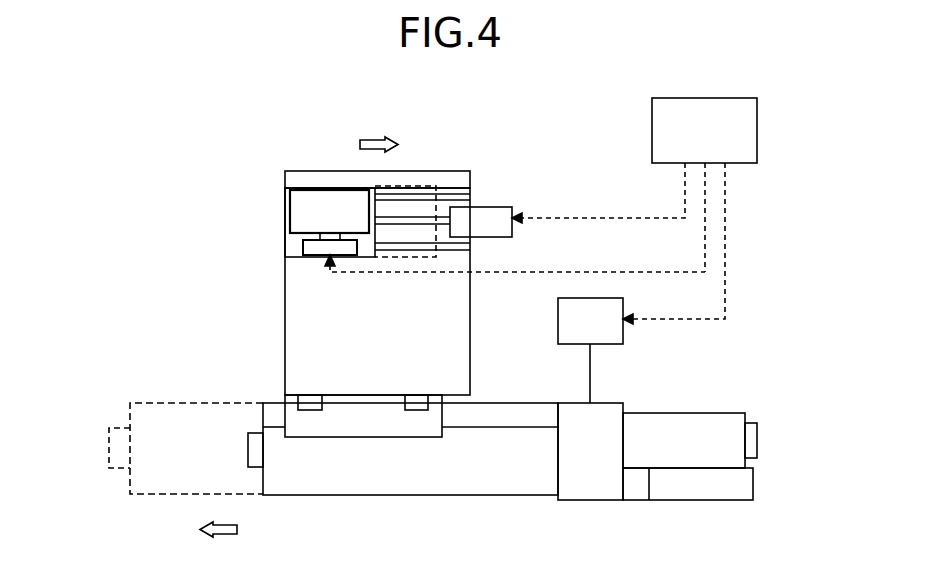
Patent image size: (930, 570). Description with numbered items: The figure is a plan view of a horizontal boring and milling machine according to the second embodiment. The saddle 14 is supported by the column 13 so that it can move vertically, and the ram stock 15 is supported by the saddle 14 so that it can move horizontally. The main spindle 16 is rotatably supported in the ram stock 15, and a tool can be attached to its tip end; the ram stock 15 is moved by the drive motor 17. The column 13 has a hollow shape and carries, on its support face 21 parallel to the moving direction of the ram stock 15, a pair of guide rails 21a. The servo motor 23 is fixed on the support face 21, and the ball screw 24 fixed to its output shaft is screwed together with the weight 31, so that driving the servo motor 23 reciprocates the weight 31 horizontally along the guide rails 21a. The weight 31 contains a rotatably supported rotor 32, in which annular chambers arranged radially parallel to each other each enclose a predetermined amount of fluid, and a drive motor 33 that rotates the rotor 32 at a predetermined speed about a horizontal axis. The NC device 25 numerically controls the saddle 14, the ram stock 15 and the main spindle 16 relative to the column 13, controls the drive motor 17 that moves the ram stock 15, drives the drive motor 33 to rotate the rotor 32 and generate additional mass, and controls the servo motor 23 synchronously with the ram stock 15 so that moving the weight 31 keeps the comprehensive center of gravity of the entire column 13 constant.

The column 13 is at (292, 318).
The saddle 14 is at (340, 432).
The ram stock 15 is at (487, 488).
The main spindle 16 is at (255, 437).
The drive motor 17 is at (608, 337).
The support face 21 is at (455, 176).
The guide rails 21a is at (472, 197).
The servo motor 23 is at (511, 210).
The ball screw 24 is at (390, 220).
The NC device 25 is at (759, 100).
The weight 31 is at (283, 189).
The rotor 32 is at (303, 196).
The drive motor 33 is at (303, 247).